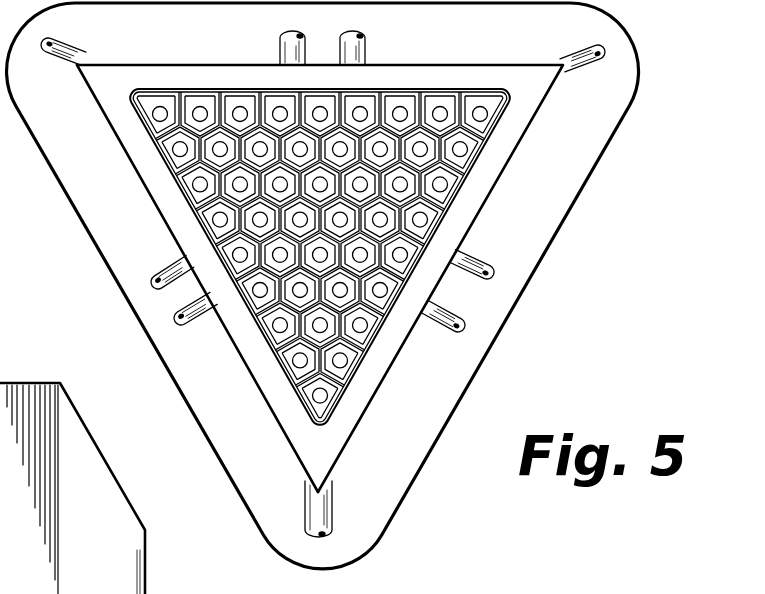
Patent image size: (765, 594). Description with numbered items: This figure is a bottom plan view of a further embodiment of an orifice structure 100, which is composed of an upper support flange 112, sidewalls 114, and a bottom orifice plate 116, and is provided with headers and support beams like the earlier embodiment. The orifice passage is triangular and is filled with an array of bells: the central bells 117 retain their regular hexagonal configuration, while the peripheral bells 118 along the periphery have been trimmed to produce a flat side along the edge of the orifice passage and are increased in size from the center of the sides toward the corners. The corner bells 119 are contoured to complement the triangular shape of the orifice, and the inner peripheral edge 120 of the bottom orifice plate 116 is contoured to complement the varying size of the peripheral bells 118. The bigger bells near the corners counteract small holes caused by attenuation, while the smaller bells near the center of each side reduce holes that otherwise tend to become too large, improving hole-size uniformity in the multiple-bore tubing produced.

The orifice structure 100 is at (618, 67).
The upper support flange 112 is at (530, 247).
The sidewalls 114 is at (462, 66).
The bottom orifice plate 116 is at (138, 148).
The central bells 117 is at (314, 245).
The peripheral bells 118 is at (170, 202).
The corner bells 119 is at (143, 96).
The inner peripheral edge 120 is at (223, 272).